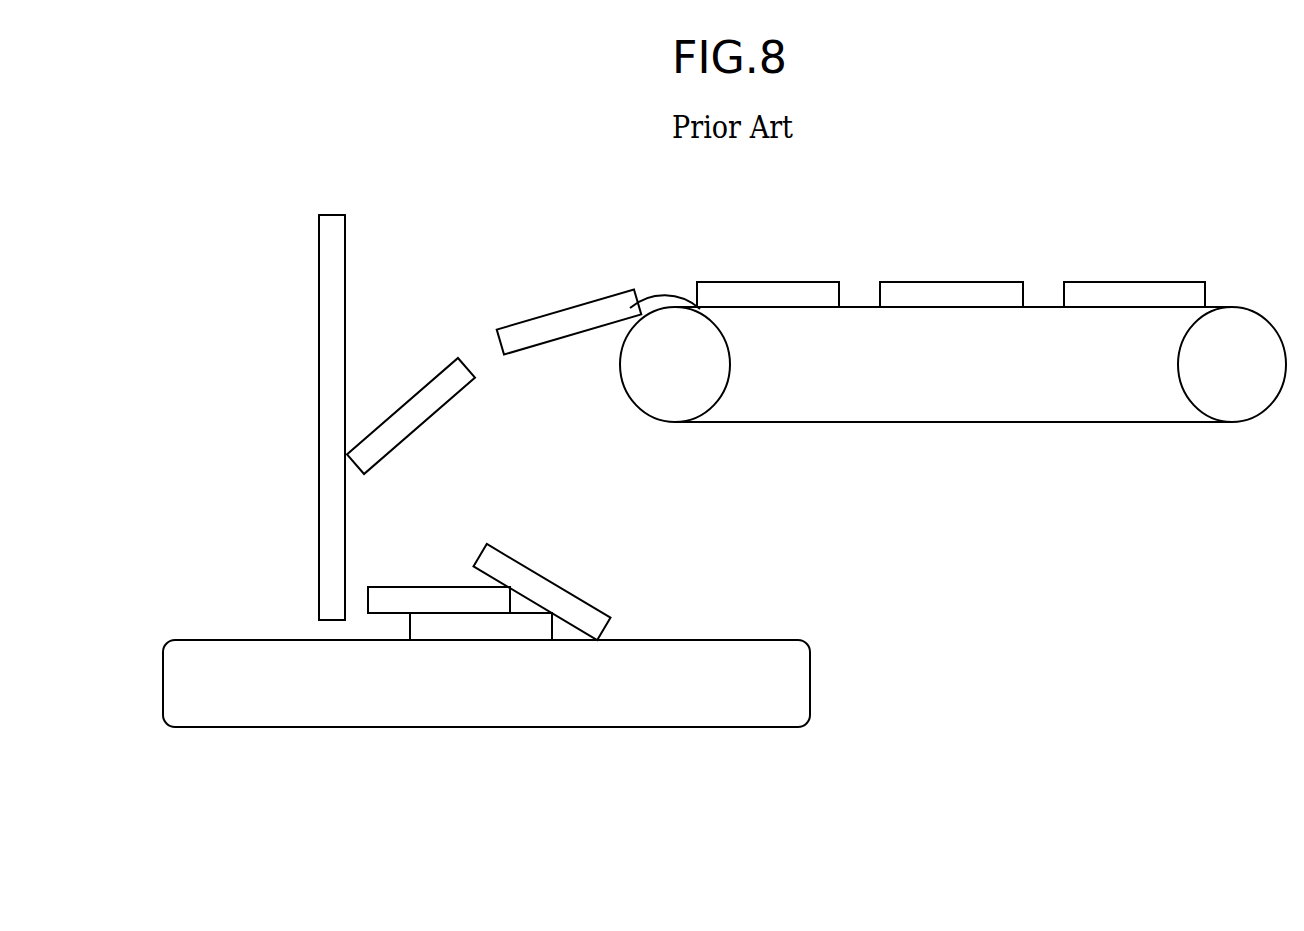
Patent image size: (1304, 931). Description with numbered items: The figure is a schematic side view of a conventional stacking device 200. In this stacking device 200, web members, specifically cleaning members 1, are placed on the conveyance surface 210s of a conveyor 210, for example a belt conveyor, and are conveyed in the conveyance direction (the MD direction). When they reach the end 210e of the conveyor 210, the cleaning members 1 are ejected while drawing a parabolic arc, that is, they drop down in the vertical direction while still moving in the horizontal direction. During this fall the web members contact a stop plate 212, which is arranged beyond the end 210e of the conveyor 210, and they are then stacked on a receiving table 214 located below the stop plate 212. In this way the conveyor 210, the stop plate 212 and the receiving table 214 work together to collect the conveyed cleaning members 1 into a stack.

The cleaning member 1 is at (1005, 292).
The stacking device 200 is at (1207, 208).
The conveyor 210 is at (1073, 462).
The end of the conveyor 210e is at (671, 307).
The conveyance surface 210s is at (857, 305).
The stop plate 212 is at (331, 295).
The receiving table 214 is at (731, 705).